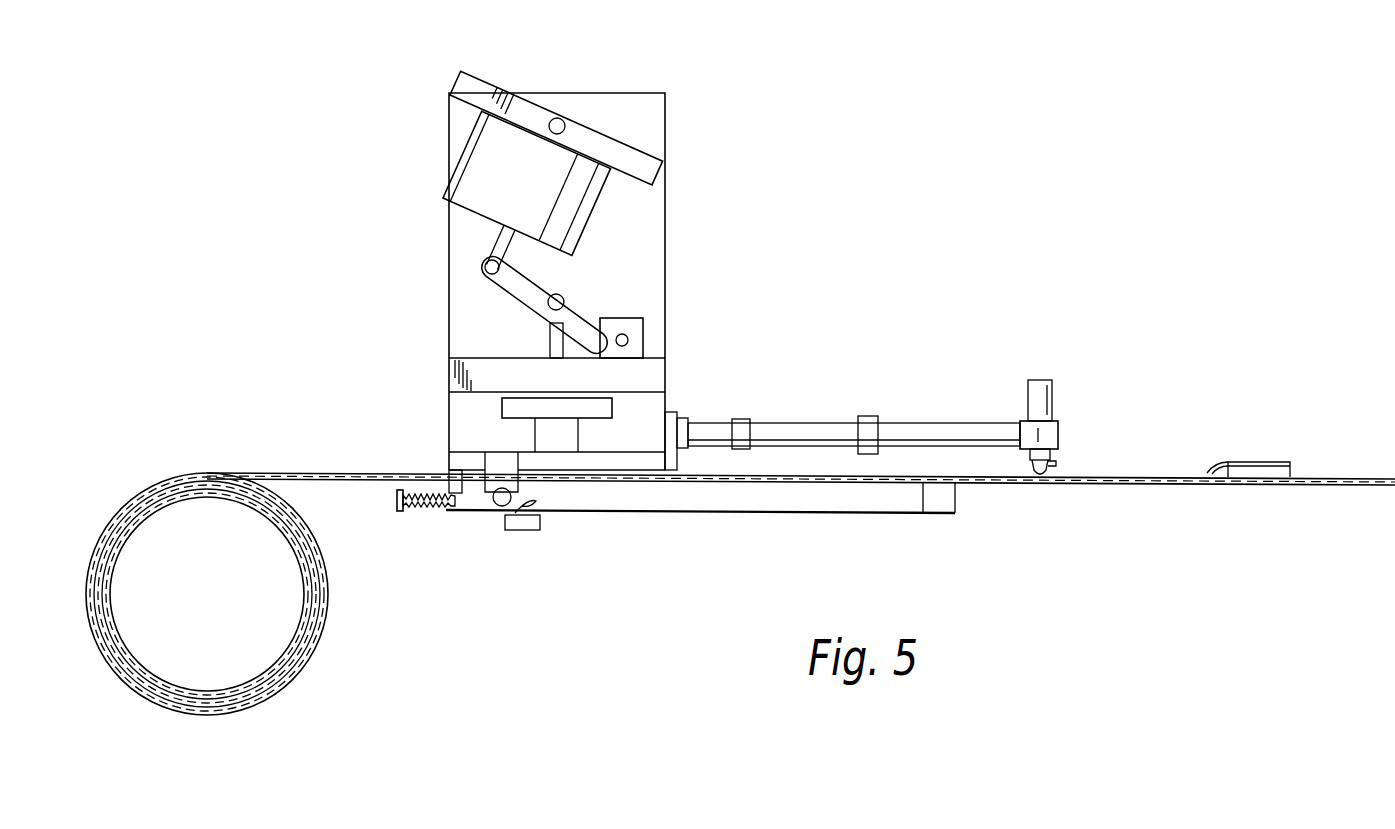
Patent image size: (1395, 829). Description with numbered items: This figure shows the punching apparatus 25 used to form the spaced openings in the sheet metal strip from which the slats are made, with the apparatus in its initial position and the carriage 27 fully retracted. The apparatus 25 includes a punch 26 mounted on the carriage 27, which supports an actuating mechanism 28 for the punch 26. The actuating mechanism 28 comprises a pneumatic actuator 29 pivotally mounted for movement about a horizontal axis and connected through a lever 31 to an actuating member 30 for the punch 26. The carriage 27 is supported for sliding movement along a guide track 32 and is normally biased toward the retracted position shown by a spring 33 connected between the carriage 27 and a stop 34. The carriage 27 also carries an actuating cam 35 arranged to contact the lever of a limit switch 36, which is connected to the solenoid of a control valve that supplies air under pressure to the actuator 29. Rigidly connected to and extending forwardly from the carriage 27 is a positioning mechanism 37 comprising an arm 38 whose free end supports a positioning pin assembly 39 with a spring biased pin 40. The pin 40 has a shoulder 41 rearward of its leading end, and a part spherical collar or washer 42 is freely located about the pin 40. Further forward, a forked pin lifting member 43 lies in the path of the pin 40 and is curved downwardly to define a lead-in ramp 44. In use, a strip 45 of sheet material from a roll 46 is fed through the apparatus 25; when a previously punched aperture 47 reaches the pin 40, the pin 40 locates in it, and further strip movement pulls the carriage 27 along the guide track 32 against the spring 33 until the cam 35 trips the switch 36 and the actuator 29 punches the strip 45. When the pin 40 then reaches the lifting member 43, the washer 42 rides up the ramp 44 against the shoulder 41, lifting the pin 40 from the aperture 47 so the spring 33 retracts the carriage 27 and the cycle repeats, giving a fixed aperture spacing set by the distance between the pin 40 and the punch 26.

The apparatus 25 is at (944, 272).
The punch 26 is at (505, 407).
The carriage 27 is at (665, 277).
The actuating mechanism 28 is at (480, 296).
The pneumatic actuator 29 is at (473, 178).
The actuating member 30 is at (550, 333).
The lever 31 is at (557, 283).
The guide track 32 is at (656, 504).
The spring 33 is at (433, 512).
The stop 34 is at (400, 512).
The actuating cam 35 is at (488, 502).
The limit switch 36 is at (527, 531).
The positioning mechanism 37 is at (1078, 330).
The arm 38 is at (900, 422).
The positioning pin assembly 39 is at (1110, 390).
The pin 40 is at (1037, 470).
The shoulder 41 is at (1057, 457).
The washer 42 is at (1057, 464).
The pin lifting member 43 is at (1278, 462).
The lead-in ramp 44 is at (1219, 476).
The strip 45 is at (1353, 485).
The roll 46 is at (228, 715).
The aperture 47 is at (923, 484).